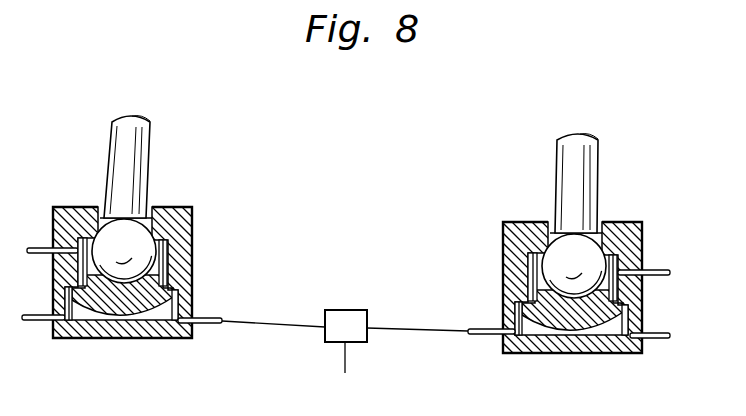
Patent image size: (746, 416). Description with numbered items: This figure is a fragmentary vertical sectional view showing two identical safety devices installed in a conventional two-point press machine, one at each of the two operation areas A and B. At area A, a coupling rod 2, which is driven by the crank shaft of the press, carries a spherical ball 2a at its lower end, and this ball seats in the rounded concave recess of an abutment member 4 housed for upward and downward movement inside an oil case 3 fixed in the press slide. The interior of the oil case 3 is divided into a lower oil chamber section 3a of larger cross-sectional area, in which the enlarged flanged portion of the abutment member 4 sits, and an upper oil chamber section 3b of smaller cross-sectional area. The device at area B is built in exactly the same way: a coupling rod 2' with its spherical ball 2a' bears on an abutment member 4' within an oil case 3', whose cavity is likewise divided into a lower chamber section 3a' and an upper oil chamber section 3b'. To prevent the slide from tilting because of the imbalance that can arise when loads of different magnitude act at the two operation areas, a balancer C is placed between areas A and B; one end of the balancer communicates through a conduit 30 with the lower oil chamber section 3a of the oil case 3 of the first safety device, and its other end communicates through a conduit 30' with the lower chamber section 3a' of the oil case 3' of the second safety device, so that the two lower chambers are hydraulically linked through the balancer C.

The operation area A is at (211, 71).
The operation area B is at (544, 84).
The coupling rod 2 is at (113, 167).
The spherical ball 2a is at (142, 228).
The oil case 3 is at (170, 296).
The lower oil chamber section 3a is at (109, 337).
The upper oil chamber section 3b is at (97, 228).
The abutment member 4 is at (122, 323).
The conduit 30 is at (251, 301).
The balancer C is at (347, 322).
The coupling rod 2' is at (593, 183).
The spherical ball 2a' is at (553, 241).
The oil case 3' is at (545, 307).
The lower oil chamber section 3a' is at (578, 350).
The upper oil chamber section 3b' is at (614, 257).
The abutment member 4' is at (571, 336).
The conduit 30' is at (441, 312).